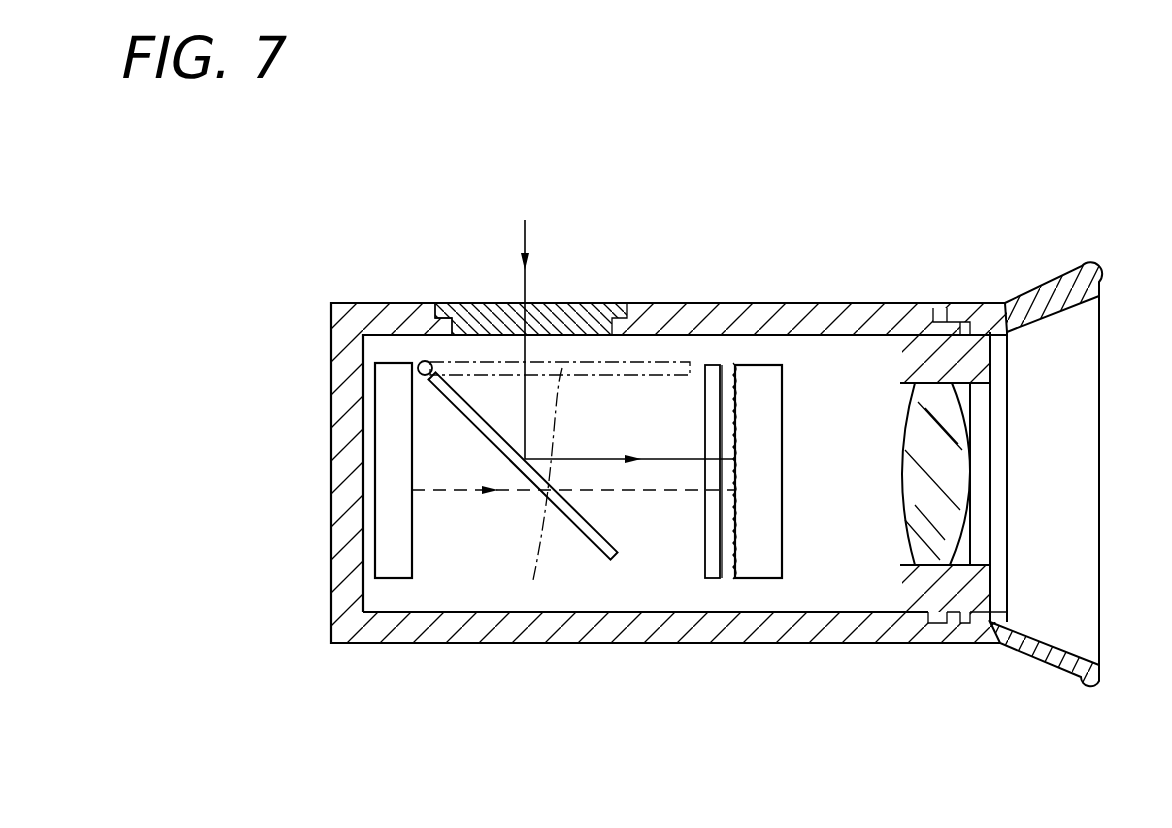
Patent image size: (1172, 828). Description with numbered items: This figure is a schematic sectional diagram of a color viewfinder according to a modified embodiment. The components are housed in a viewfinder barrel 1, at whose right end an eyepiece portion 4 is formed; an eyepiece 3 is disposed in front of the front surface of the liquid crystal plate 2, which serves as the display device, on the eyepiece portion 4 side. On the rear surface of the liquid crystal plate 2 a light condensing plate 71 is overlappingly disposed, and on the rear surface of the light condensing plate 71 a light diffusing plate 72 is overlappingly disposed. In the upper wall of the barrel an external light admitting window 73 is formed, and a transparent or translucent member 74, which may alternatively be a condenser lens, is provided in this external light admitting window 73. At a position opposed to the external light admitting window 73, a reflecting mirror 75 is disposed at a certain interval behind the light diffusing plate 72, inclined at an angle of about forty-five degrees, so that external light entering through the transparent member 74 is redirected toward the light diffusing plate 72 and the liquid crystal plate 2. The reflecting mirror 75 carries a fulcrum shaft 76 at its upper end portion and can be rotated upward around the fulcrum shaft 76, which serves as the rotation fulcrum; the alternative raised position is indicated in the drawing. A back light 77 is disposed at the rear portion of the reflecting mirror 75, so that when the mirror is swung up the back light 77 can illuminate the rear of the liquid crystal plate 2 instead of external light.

The viewfinder barrel 1 is at (843, 303).
The liquid crystal plate 2 is at (762, 458).
The eyepiece 3 is at (945, 465).
The eyepiece portion 4 is at (1052, 297).
The light condensing plate 71 is at (727, 365).
The light diffusing plate 72 is at (708, 365).
The external light admitting window 73 is at (447, 303).
The transparent member 74 is at (563, 303).
The reflecting mirror 75 is at (580, 523).
The fulcrum shaft 76 is at (421, 362).
The back light 77 is at (390, 462).